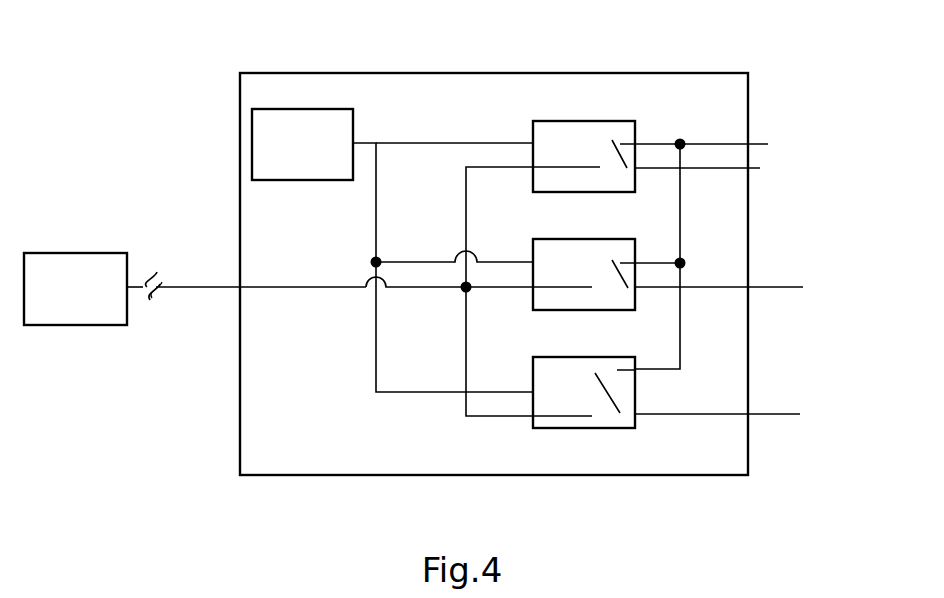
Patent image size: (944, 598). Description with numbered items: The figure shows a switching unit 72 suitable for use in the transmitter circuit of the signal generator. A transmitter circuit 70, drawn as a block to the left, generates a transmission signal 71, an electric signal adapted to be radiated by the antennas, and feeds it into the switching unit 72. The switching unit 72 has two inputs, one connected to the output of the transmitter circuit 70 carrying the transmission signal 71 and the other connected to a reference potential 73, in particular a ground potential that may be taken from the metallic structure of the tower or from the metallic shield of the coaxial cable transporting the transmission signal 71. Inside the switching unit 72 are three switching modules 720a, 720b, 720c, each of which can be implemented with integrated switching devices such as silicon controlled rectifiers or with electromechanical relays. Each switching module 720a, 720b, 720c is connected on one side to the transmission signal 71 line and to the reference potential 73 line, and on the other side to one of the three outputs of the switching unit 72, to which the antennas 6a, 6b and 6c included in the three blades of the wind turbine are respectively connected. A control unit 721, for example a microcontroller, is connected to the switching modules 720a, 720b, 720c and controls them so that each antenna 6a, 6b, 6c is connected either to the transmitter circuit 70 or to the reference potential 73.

The transmitter circuit 70 is at (75, 289).
The transmission signal 71 is at (218, 305).
The switching unit 72 is at (590, 73).
The control unit 721 is at (302, 144).
The switching module 720a is at (584, 139).
The switching module 720b is at (584, 257).
The switching module 720c is at (584, 375).
The reference potential 73 is at (719, 240).
The antenna 6a is at (718, 177).
The antenna 6b is at (746, 283).
The antenna 6c is at (733, 428).